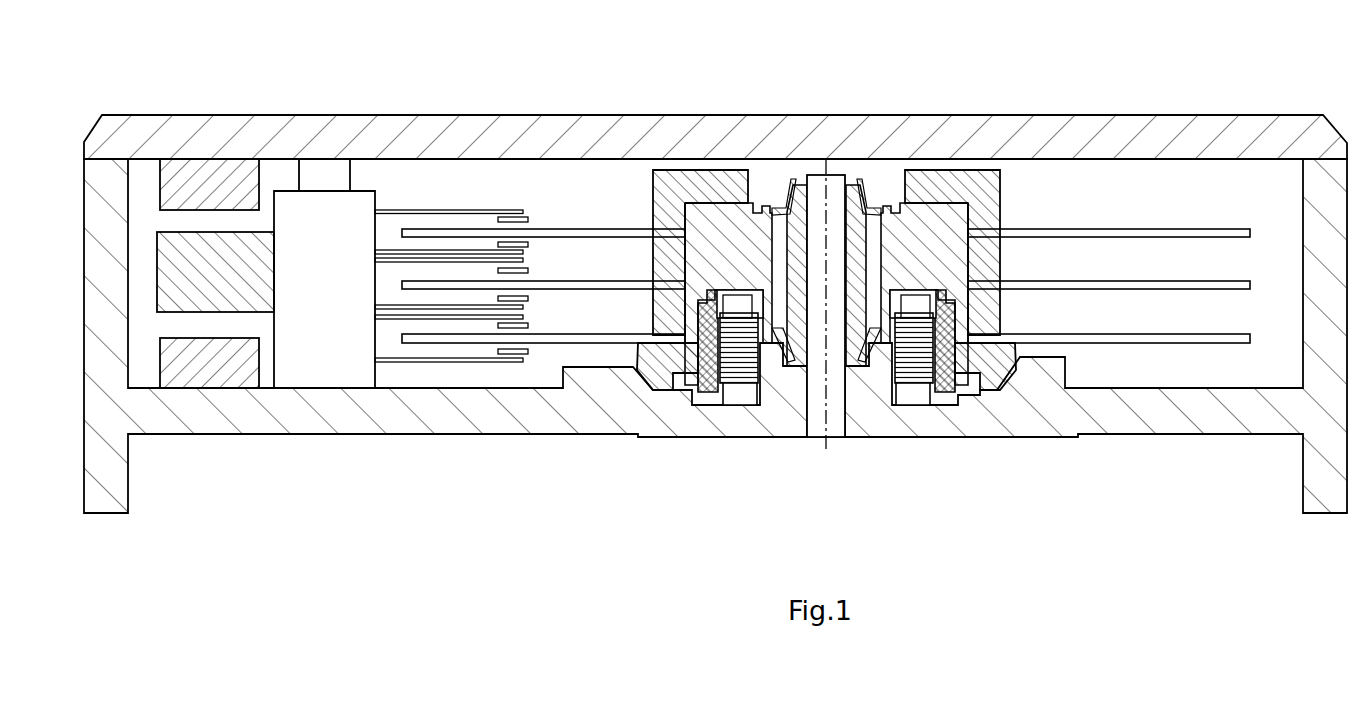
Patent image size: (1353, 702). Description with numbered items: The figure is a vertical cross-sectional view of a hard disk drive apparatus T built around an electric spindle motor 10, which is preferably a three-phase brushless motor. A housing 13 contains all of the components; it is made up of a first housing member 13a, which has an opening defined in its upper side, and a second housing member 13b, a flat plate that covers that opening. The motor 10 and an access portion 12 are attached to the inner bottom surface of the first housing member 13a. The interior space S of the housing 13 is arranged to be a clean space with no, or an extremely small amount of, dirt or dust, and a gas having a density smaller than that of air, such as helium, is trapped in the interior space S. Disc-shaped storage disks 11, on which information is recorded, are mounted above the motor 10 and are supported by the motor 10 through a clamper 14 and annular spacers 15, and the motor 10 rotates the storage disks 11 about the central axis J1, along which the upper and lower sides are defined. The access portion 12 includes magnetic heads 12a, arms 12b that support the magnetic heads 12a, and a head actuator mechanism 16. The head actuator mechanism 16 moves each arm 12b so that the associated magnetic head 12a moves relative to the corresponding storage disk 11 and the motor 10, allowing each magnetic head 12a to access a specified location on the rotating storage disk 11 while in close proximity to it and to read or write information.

The electric spindle motor 10 is at (880, 176).
The storage disks 11 is at (578, 228).
The access portion 12 is at (457, 278).
The magnetic heads 12a is at (513, 215).
The arms 12b is at (425, 208).
The housing 13 is at (715, 275).
The first housing member 13a is at (1157, 435).
The second housing member 13b is at (1120, 115).
The clamper 14 is at (677, 170).
The annular spacers 15 is at (653, 315).
The head actuator mechanism 16 is at (325, 168).
The central axis J1 is at (822, 172).
The interior space S is at (1220, 180).
The disk drive device T is at (803, 20).